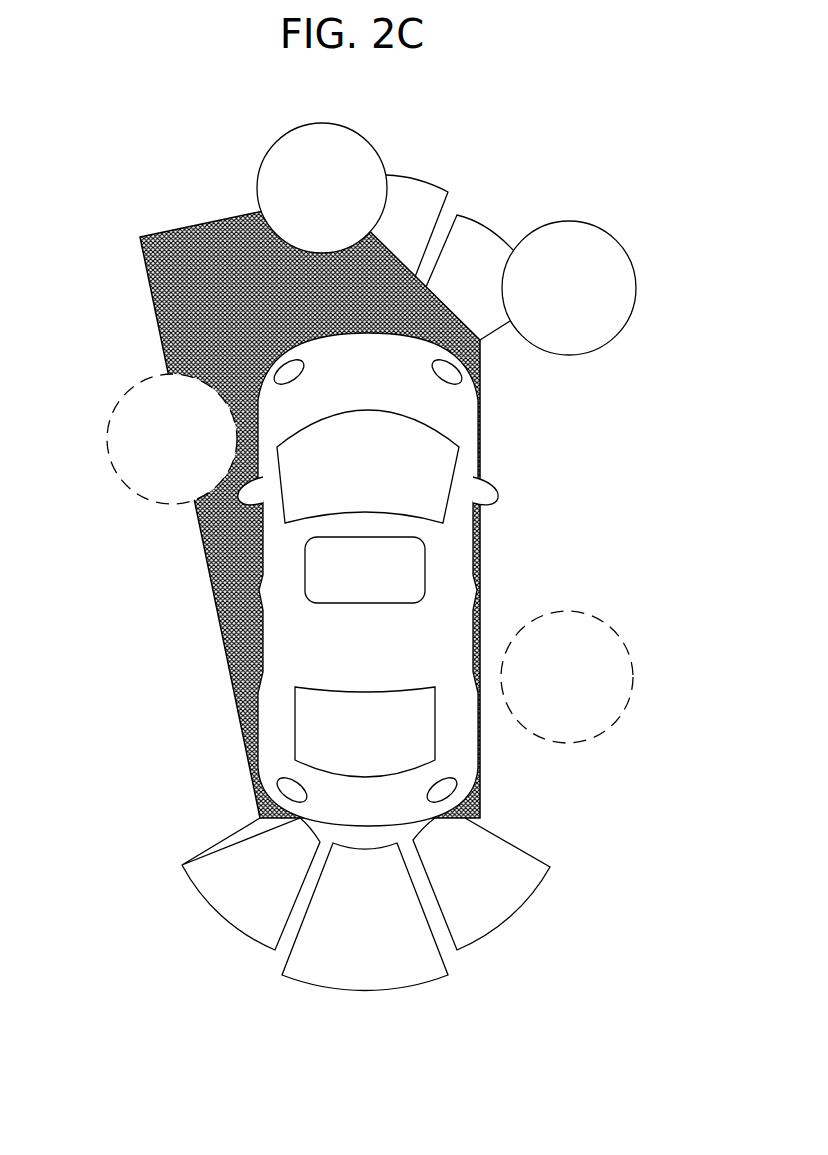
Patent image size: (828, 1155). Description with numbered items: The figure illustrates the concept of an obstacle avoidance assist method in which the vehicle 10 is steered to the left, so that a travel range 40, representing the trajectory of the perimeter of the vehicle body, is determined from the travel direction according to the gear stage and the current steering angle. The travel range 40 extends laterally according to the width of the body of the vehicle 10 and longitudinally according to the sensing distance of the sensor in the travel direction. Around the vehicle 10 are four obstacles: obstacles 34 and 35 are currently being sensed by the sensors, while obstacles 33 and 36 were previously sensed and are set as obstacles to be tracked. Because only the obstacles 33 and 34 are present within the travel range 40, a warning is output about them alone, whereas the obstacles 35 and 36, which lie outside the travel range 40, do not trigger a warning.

The vehicle 10 is at (284, 737).
The previously sensed obstacle 33 is at (107, 447).
The currently sensed obstacle 34 is at (259, 170).
The currently sensed obstacle 35 is at (636, 289).
The previously sensed obstacle 36 is at (633, 670).
The travel range 40 is at (180, 229).